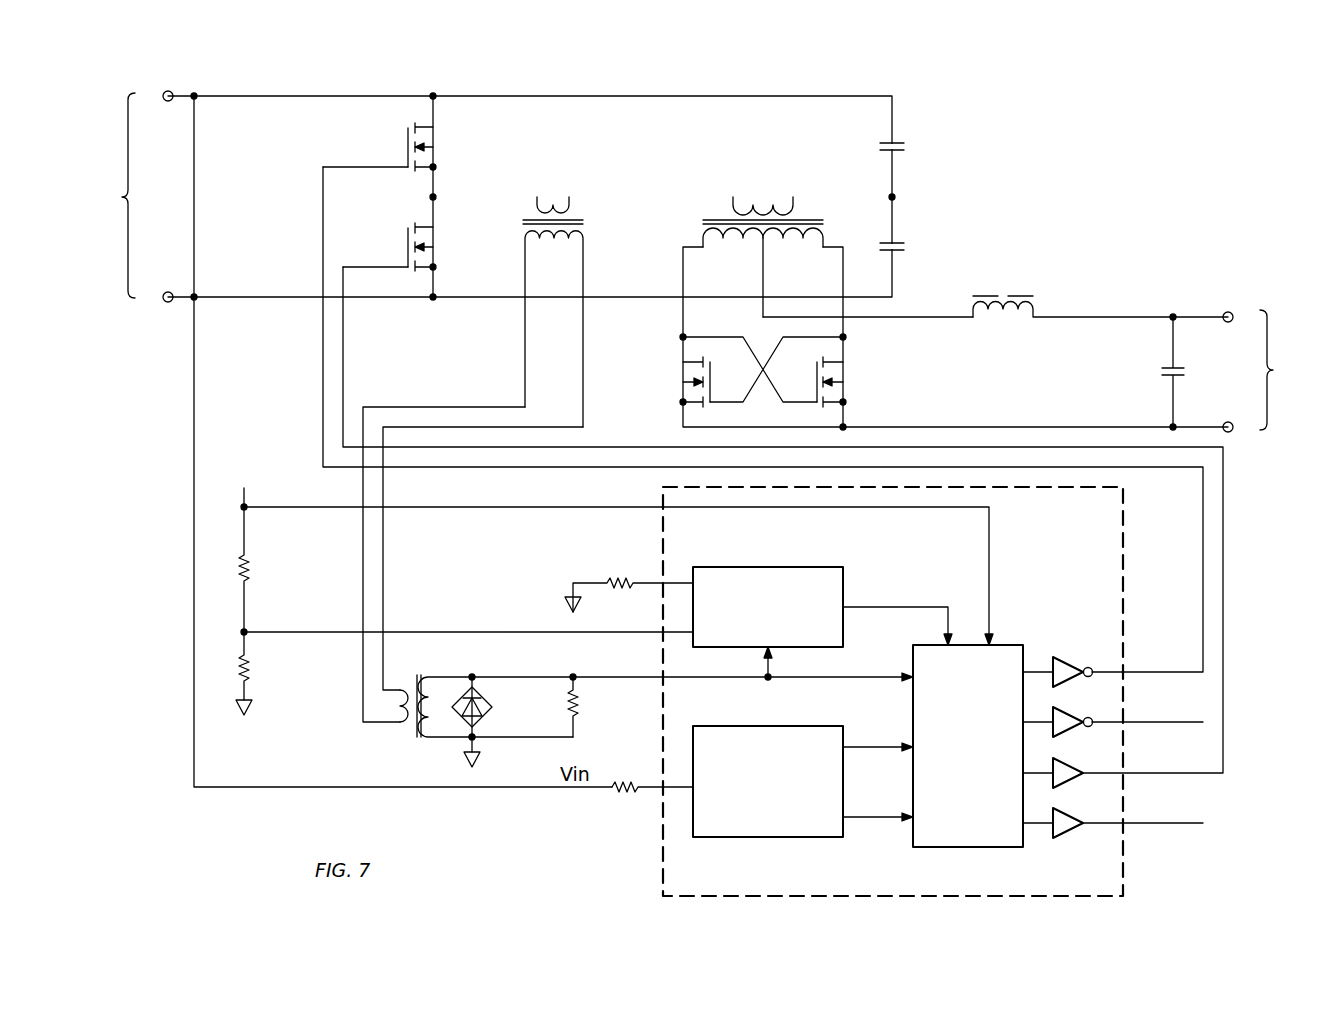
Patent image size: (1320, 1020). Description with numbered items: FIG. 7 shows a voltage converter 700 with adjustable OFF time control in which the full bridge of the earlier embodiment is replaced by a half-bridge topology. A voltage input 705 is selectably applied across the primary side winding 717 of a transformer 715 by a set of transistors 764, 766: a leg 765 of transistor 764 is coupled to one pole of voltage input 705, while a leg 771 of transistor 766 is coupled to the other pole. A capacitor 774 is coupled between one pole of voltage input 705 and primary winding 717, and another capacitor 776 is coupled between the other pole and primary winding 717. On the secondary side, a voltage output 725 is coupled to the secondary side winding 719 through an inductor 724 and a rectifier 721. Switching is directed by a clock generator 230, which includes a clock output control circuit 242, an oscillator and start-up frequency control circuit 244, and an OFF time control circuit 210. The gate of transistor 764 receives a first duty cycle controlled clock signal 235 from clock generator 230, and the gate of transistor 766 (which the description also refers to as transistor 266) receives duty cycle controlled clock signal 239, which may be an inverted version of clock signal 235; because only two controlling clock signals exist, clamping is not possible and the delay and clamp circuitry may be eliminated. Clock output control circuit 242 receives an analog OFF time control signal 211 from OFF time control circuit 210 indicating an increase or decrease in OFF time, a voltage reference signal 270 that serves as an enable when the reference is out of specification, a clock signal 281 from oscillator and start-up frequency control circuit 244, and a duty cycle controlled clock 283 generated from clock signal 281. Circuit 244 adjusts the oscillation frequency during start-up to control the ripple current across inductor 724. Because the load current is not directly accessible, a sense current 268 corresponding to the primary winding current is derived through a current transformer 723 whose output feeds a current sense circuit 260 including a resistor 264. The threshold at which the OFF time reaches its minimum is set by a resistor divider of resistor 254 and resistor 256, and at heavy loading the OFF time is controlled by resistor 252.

The voltage converter 700 is at (1172, 127).
The voltage input 705 is at (110, 195).
The transistor 764 is at (407, 142).
The leg of transistor 765 is at (436, 106).
The transistor 766 is at (407, 241).
The leg of transistor 771 is at (436, 289).
The current sense transformer 723 is at (604, 232).
The transformer 715 is at (763, 225).
The primary side winding 717 is at (770, 200).
The secondary side winding 719 is at (741, 243).
The capacitor 774 is at (905, 150).
The capacitor 776 is at (905, 250).
The synchronous rectifier switches 721 is at (860, 372).
The inductor 724 is at (1010, 320).
The voltage output 725 is at (1081, 372).
The duty cycle controlled clock signal 239 is at (1203, 588).
The first duty cycle controlled clock signal 235 is at (1225, 607).
The current sense circuit 260 is at (420, 754).
The transistor 266 is at (493, 709).
The resistor 264 is at (578, 708).
The resistor 254 is at (249, 570).
The resistor 256 is at (249, 669).
The voltage reference signal 270 is at (991, 575).
The resistor 252 is at (612, 580).
The clock generator 230 is at (889, 691).
The OFF time control circuit 210 is at (759, 566).
The OFF time control signal 211 is at (896, 606).
The sense current 268 is at (866, 675).
The clock output control circuit 242 is at (951, 802).
The oscillator and start-up frequency control circuit 244 is at (759, 838).
The clock signal 281 is at (876, 750).
The duty cycle controlled clock 283 is at (876, 820).